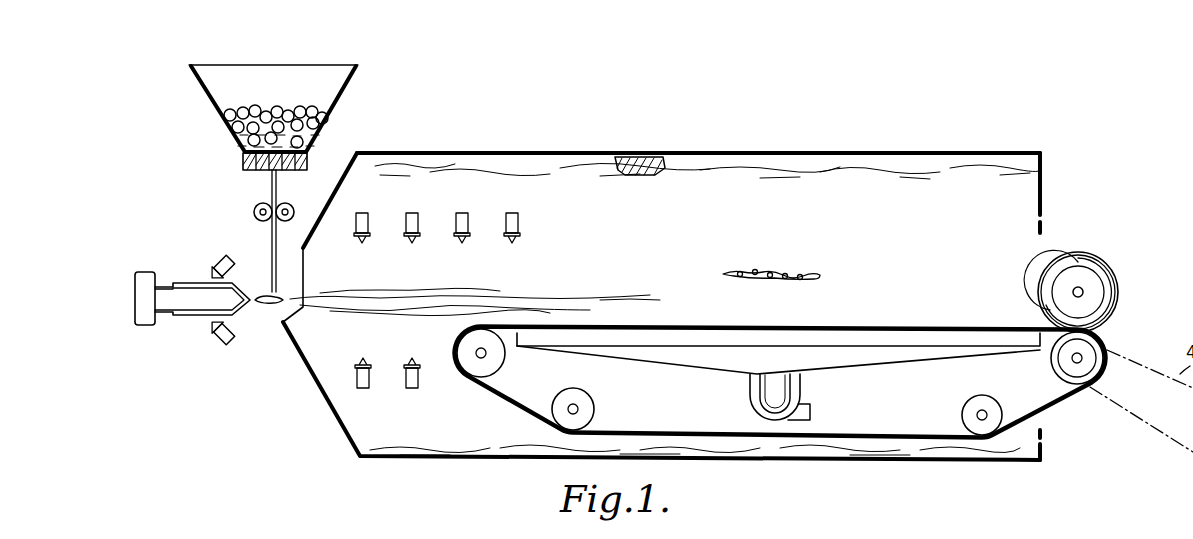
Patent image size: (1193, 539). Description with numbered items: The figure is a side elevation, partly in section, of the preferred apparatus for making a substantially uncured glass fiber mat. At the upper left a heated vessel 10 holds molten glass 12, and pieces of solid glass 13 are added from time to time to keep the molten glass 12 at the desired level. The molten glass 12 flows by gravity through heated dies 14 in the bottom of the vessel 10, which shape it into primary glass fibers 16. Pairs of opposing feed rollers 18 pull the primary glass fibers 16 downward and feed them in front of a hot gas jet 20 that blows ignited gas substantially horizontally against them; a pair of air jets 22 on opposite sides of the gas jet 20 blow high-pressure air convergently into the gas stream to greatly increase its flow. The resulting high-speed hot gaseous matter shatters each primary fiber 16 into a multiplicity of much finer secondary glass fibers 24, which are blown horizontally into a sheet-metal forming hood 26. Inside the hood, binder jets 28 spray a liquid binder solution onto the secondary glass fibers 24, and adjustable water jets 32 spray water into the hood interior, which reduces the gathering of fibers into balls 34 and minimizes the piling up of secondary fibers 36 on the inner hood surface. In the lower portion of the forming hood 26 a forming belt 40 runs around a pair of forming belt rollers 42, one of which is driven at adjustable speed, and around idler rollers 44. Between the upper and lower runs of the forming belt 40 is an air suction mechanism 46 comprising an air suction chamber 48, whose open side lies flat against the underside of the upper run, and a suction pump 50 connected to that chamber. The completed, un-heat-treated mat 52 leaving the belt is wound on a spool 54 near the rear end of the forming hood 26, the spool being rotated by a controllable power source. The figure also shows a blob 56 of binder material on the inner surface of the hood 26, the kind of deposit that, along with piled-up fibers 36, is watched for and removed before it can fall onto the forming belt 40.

The vessel 10 is at (350, 99).
The molten glass 12 is at (312, 141).
The pieces of solid glass 13 is at (298, 109).
The heated dies 14 is at (271, 172).
The primary glass fibers 16 is at (271, 233).
The feed rollers 18 is at (296, 211).
The hot gas jets 20 is at (244, 297).
The air jets 22 is at (231, 332).
The secondary glass fibers 24 is at (382, 309).
The forming hood 26 is at (516, 153).
The binder jets 28 is at (415, 347).
The adjustable water jets 32 is at (515, 243).
The balls 34 is at (806, 272).
The piled-up secondary fibers 36 is at (848, 166).
The forming belt 40 is at (870, 448).
The forming belt rollers 42 is at (1052, 365).
The idler rollers 44 is at (962, 413).
The air suction mechanism 46 is at (750, 376).
The air suction chamber 48 is at (683, 344).
The suction pump 50 is at (800, 388).
The mat 52 is at (1120, 302).
The spool 54 is at (1095, 290).
The blobs of binder material 56 is at (638, 158).